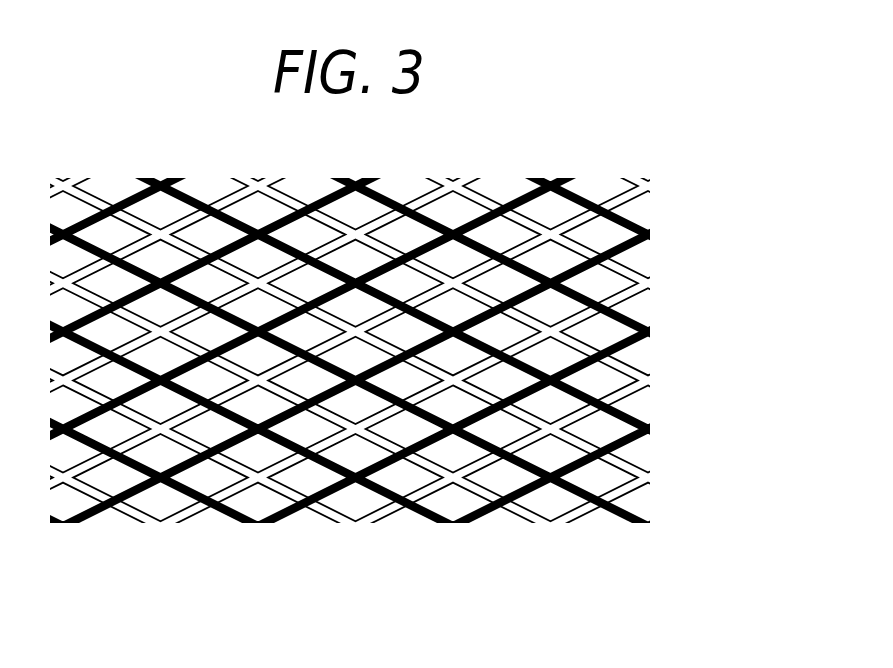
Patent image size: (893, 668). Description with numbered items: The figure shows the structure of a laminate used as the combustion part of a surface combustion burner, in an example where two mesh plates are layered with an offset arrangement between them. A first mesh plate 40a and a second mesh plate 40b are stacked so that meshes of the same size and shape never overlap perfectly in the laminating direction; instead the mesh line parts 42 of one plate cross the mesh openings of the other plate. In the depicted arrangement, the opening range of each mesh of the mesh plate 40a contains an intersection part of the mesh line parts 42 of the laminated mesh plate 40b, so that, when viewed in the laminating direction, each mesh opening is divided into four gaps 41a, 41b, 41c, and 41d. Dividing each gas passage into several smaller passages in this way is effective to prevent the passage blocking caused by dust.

The mesh plate 40a is at (640, 313).
The mesh plate 40b is at (640, 366).
The mesh line part 42 is at (455, 186).
The gap 41a is at (298, 478).
The gap 41b is at (355, 453).
The gap 41c is at (365, 502).
The gap 41d is at (413, 483).